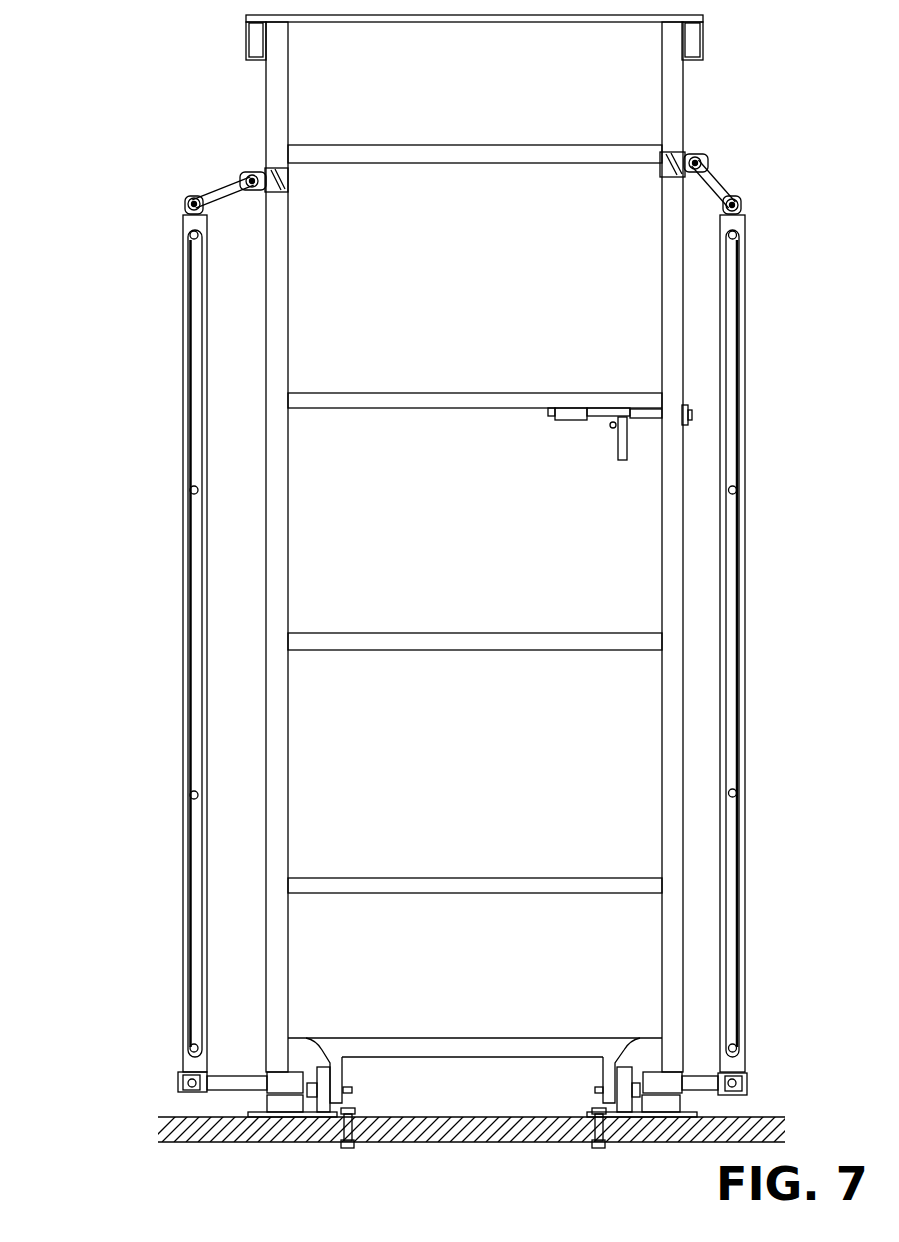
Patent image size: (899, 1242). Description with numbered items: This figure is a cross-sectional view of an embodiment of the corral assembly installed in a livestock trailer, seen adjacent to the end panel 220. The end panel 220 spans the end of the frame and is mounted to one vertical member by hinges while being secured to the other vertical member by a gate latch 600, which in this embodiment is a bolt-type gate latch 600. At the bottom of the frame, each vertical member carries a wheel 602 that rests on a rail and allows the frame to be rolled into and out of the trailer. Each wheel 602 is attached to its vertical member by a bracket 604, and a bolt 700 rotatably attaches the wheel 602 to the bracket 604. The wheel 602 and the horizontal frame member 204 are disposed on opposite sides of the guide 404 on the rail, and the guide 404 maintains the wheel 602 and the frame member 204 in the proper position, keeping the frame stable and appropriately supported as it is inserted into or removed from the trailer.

The end panel 220 is at (474, 554).
The gate latch 600 is at (583, 429).
The bracket 604 is at (621, 1033).
The bolt 700 is at (579, 1089).
The wheel 602 is at (320, 1121).
The horizontal frame member 204 is at (249, 1104).
The guide 404 is at (640, 1128).